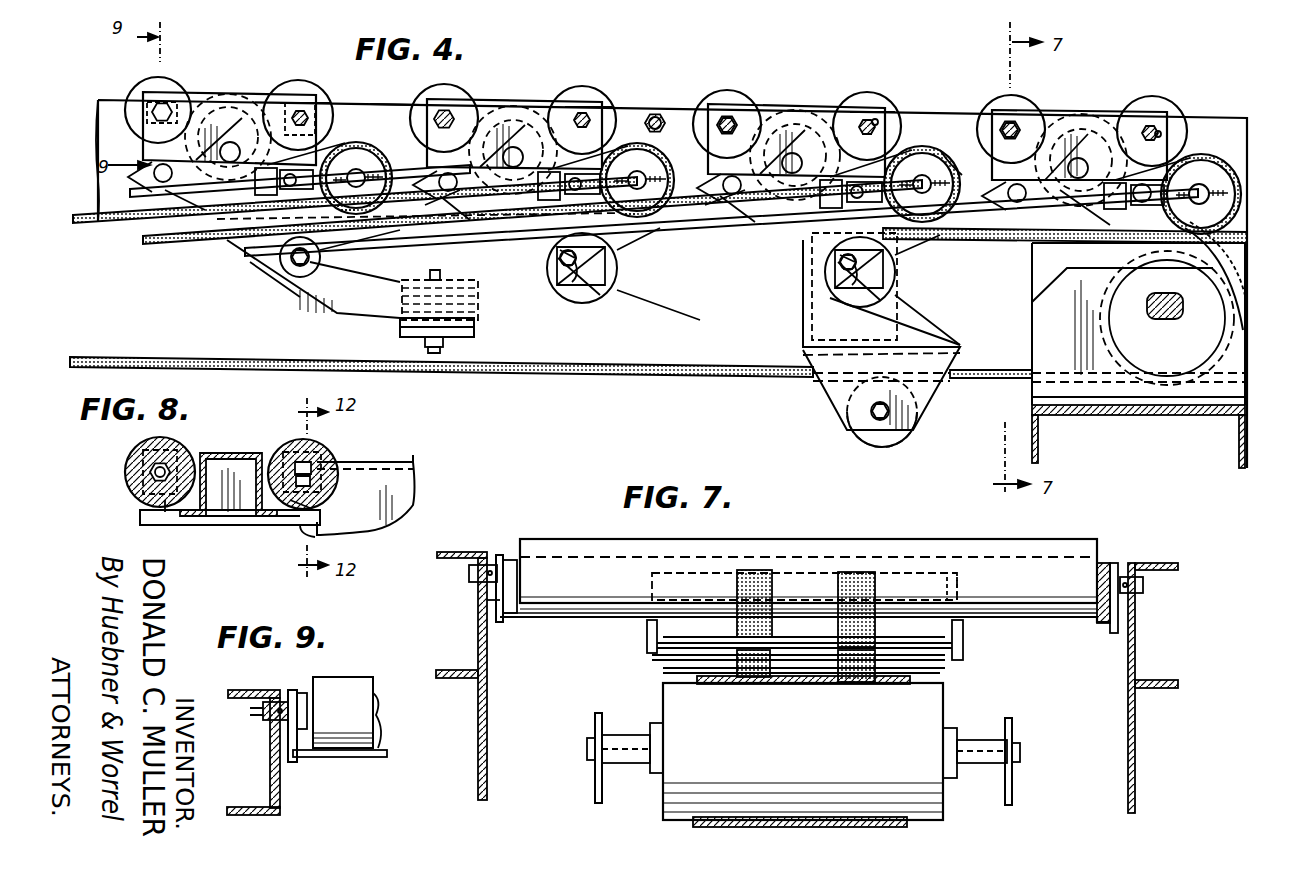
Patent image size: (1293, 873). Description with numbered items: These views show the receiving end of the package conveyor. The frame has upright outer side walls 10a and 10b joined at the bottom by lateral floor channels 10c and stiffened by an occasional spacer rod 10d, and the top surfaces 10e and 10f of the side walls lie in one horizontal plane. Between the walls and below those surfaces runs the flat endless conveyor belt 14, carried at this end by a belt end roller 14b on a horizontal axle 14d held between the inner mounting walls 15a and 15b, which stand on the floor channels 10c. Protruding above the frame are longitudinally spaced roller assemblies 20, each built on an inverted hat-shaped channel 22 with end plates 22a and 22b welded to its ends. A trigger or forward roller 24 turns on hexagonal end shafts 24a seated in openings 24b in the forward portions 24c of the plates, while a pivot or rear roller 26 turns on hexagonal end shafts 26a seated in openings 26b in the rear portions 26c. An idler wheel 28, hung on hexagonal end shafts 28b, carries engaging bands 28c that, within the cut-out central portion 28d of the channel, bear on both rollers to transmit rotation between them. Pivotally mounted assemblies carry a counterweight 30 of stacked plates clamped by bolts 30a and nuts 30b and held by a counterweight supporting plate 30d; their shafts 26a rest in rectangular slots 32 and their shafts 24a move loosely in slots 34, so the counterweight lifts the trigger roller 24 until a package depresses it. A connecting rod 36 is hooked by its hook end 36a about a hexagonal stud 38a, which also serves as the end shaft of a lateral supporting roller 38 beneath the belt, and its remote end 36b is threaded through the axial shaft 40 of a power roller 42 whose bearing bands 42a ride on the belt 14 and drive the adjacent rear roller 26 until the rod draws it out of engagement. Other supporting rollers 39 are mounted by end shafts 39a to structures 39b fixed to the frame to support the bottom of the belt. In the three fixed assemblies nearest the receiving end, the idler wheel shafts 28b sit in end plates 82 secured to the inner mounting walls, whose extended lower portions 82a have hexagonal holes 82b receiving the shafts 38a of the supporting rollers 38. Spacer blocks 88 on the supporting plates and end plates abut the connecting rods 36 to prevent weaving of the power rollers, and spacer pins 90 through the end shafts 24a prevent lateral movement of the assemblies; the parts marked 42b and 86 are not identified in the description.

In FIG. 8, the outer side wall 10a is at (408, 500).
In FIG. 9, the outer side wall 10a is at (268, 775).
In FIG. 7, the outer side wall 10a is at (478, 622).
In FIG. 4, the outer side wall 10b is at (1247, 127).
In FIG. 7, the outer side wall 10b is at (1135, 636).
In FIG. 4, the floor channel 10c is at (1128, 416).
In FIG. 4, the spacer rod 10d is at (656, 110).
In FIG. 8, the top surface 10e is at (413, 458).
In FIG. 9, the top surface 10e is at (232, 688).
In FIG. 7, the top surface 10e is at (448, 553).
In FIG. 4, the top surface 10f is at (388, 103).
In FIG. 7, the top surface 10f is at (1160, 566).
In FIG. 4, the conveyor belt 14 is at (98, 222).
In FIG. 7, the conveyor belt 14 is at (697, 679).
In FIG. 4, the belt end roller 14b is at (1243, 270).
In FIG. 7, the belt end roller 14b is at (803, 755).
In FIG. 4, the axle 14d is at (1165, 320).
In FIG. 7, the axle 14d is at (968, 745).
In FIG. 7, the inner mounting wall 15a is at (595, 780).
In FIG. 4, the inner mounting wall 15b is at (1247, 368).
In FIG. 7, the inner mounting wall 15b is at (1012, 787).
In FIG. 4, the roller assembly 20 is at (262, 66).
In FIG. 8, the inverted hat-shaped channel 22 is at (222, 452).
In FIG. 9, the inverted hat-shaped channel 22 is at (382, 712).
In FIG. 7, the inverted hat-shaped channel 22 is at (517, 618).
In FIG. 8, the end plate 22a is at (222, 523).
In FIG. 9, the end plate 22a is at (295, 757).
In FIG. 7, the end plate 22a is at (486, 602).
In FIG. 4, the end plate 22b is at (310, 80).
In FIG. 7, the end plate 22b is at (1118, 608).
In FIG. 4, the trigger or forward roller 24 is at (140, 92).
In FIG. 8, the trigger or forward roller 24 is at (150, 448).
In FIG. 9, the trigger or forward roller 24 is at (340, 690).
In FIG. 7, the trigger or forward roller 24 is at (870, 553).
In FIG. 4, the hexagonal end shaft 24a is at (728, 112).
In FIG. 8, the hexagonal end shaft 24a is at (150, 488).
In FIG. 9, the hexagonal end shaft 24a is at (262, 718).
In FIG. 7, the hexagonal end shaft 24a is at (468, 574).
In FIG. 4, the opening 24b is at (1020, 122).
In FIG. 8, the opening 24b is at (150, 468).
In FIG. 4, the forward portion 24c is at (98, 138).
In FIG. 8, the forward portion 24c is at (150, 515).
In FIG. 4, the pivot or rear roller 26 is at (320, 100).
In FIG. 8, the pivot or rear roller 26 is at (318, 455).
In FIG. 4, the hexagonal axial end shaft 26a is at (870, 132).
In FIG. 8, the hexagonal axial end shaft 26a is at (312, 480).
In FIG. 4, the opening 26b is at (880, 114).
In FIG. 8, the opening 26b is at (315, 506).
In FIG. 4, the rear portion 26c is at (880, 134).
In FIG. 8, the rear portion 26c is at (305, 535).
In FIG. 4, the idler wheel 28 is at (248, 104).
In FIG. 7, the idler wheel 28 is at (950, 660).
In FIG. 4, the hexagonal end shaft 28b is at (228, 162).
In FIG. 7, the engaging band 28c is at (737, 628).
In FIG. 7, the cut-out central portion 28d is at (962, 585).
In FIG. 4, the counterweight 30 is at (476, 330).
In FIG. 4, the bolt 30a is at (460, 280).
In FIG. 4, the nut 30b is at (423, 345).
In FIG. 4, the counterweight supporting plate 30d is at (270, 262).
In FIG. 8, the rectangular slot 32 is at (300, 462).
In FIG. 9, the slot 34 is at (290, 688).
In FIG. 7, the slot 34 is at (482, 555).
In FIG. 4, the connecting rod 36 is at (128, 193).
In FIG. 4, the hook end 36a is at (345, 243).
In FIG. 4, the rod end 36b is at (380, 165).
In FIG. 4, the lateral supporting roller 38 is at (568, 292).
In FIG. 4, the hexagonal stud 38a is at (290, 275).
In FIG. 4, the lateral supporting roller 39 is at (875, 442).
In FIG. 4, the end shaft 39a is at (868, 412).
In FIG. 4, the structure 39b is at (960, 358).
In FIG. 4, the axial shaft 40 is at (635, 190).
In FIG. 4, the power roller 42 is at (1262, 222).
In FIG. 7, the power roller 42 is at (940, 673).
In FIG. 4, the bearing band 42a is at (368, 145).
In FIG. 7, the bearing band 42a is at (745, 680).
In FIG. 4, the pulley support 42b is at (1247, 238).
In FIG. 4, the end plate 82 is at (619, 193).
In FIG. 7, the end plate 82 is at (647, 630).
In FIG. 4, the extended lower portion 82a is at (612, 262).
In FIG. 4, the hexagonal hole 82b is at (612, 284).
In FIG. 4, the nut 86 is at (285, 262).
In FIG. 4, the spacer block 88 is at (709, 189).
In FIG. 7, the spacer block 88 is at (648, 647).
In FIG. 4, the spacer pin 90 is at (182, 100).
In FIG. 8, the spacer pin 90 is at (170, 513).
In FIG. 9, the spacer pin 90 is at (250, 711).